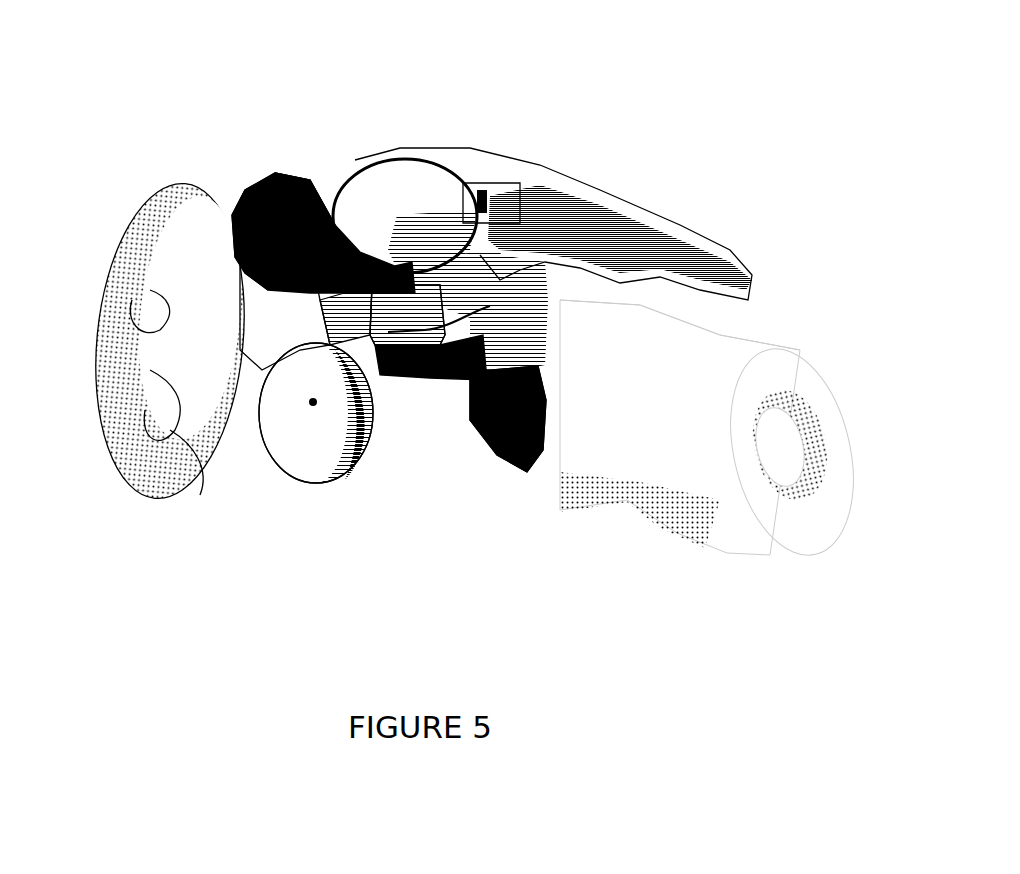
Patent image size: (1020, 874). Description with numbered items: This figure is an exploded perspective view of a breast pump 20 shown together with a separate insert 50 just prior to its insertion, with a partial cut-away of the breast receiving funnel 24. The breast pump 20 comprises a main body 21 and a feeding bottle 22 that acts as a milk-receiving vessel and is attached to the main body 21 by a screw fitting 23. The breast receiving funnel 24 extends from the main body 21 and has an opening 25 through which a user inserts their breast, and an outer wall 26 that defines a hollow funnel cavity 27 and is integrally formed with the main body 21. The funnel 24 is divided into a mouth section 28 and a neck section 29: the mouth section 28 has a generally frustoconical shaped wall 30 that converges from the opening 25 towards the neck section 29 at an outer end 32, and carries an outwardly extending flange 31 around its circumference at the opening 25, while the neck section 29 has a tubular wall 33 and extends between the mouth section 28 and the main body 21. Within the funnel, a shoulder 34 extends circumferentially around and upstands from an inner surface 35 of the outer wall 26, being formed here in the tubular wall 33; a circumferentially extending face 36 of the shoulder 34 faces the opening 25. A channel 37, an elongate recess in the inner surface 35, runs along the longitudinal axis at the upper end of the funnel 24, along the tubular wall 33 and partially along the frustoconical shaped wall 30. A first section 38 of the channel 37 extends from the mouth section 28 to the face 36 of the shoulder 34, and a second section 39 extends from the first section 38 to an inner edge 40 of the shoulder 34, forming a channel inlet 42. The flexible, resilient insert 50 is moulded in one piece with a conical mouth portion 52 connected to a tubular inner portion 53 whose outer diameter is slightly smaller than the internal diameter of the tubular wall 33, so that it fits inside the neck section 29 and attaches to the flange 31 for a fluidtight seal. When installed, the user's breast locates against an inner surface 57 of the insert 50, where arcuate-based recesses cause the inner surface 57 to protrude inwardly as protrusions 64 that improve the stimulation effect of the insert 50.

The breast pump 20 is at (671, 130).
The main body 21 is at (497, 268).
The feeding bottle 22 is at (758, 326).
The screw fitting 23 is at (528, 470).
The breast receiving funnel 24 is at (262, 192).
The opening 25 is at (240, 218).
The outer wall 26 is at (385, 378).
The hollow funnel cavity 27 is at (315, 402).
The mouth section 28 is at (353, 247).
The neck section 29 is at (417, 270).
The frustoconical shaped wall 30 is at (335, 433).
The outwardly extending flange 31 is at (290, 182).
The outer end 32 is at (282, 443).
The tubular wall 33 is at (415, 372).
The shoulder 34 is at (486, 378).
The inner surface 35 is at (390, 253).
The circumferentially extending face 36 is at (467, 195).
The channel 37 is at (347, 250).
The first section of the channel 38 is at (328, 205).
The second section of the channel 39 is at (500, 265).
The inner edge of the shoulder 40 is at (545, 478).
The channel inlet 42 is at (388, 313).
The insert 50 is at (116, 172).
The conical mouth portion 52 is at (180, 440).
The tubular inner portion 53 is at (285, 368).
The inner surface of the insert 57 is at (147, 377).
The protrusions 64 is at (157, 305).